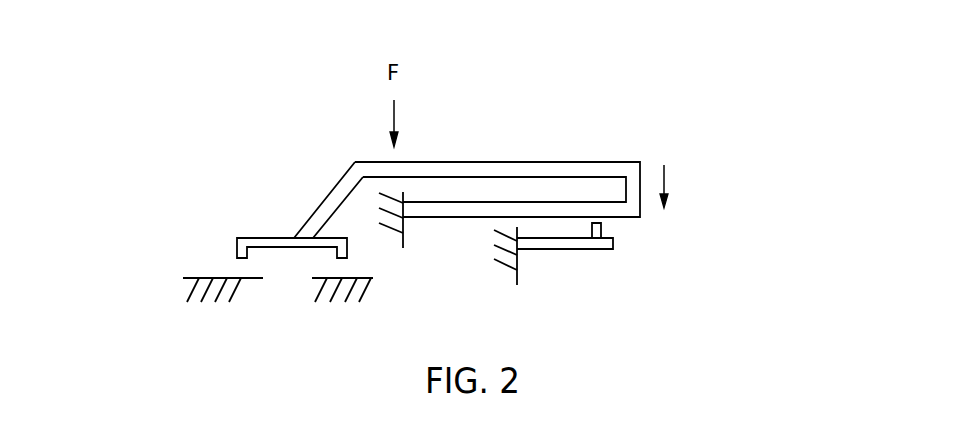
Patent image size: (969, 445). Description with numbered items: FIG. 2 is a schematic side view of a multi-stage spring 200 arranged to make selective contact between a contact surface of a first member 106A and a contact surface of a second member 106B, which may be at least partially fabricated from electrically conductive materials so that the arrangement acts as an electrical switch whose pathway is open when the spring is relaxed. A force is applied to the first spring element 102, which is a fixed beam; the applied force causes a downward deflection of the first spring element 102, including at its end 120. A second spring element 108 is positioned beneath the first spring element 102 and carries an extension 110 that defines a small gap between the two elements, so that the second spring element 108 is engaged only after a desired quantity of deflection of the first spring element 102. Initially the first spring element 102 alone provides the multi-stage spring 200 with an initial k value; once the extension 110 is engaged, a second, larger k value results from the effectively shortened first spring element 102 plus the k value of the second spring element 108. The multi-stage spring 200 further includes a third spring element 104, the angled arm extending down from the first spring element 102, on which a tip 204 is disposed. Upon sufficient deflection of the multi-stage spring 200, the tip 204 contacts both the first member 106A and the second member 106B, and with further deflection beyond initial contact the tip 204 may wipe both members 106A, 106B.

The multi-stage spring 200 is at (501, 67).
The first spring element 102 is at (563, 160).
The third spring element 104 is at (337, 186).
The tip 204 is at (237, 248).
The first member 106A is at (206, 278).
The second member 106B is at (373, 278).
The second spring element 108 is at (570, 250).
The extension 110 is at (603, 228).
The end 120 is at (626, 161).